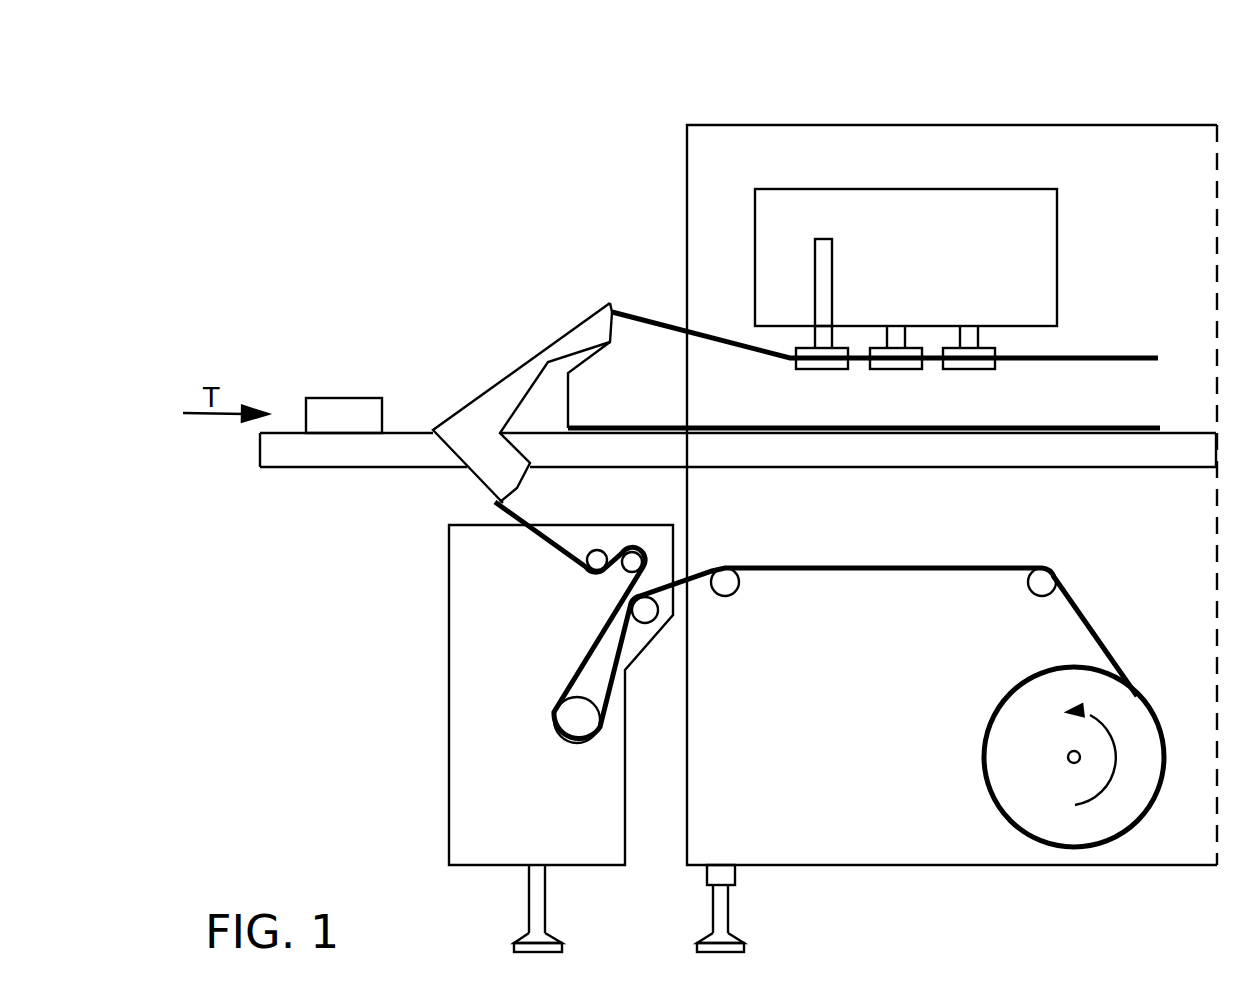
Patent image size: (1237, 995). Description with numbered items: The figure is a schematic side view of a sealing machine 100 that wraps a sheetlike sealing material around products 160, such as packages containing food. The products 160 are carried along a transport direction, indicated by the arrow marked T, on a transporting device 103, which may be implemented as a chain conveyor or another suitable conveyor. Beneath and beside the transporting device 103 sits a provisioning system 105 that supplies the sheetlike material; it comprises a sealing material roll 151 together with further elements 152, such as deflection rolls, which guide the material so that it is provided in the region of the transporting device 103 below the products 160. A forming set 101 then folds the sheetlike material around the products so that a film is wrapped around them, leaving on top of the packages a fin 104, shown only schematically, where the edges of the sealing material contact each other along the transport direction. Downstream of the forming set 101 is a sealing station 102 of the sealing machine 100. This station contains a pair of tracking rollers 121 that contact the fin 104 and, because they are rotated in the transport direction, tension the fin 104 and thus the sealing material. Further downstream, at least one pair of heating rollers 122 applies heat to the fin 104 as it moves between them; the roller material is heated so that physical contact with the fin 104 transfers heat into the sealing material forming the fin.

The sealing machine 100 is at (526, 110).
The forming set 101 is at (526, 330).
The sealing station 102 is at (952, 469).
The transporting device 103 is at (272, 488).
The fin 104 is at (655, 320).
The provisioning system 105 is at (751, 727).
The pair of tracking rollers 121 is at (815, 241).
The pair of heating rollers 122 is at (895, 330).
The sealing material roll 151 is at (1003, 760).
The deflection rolls 152 is at (577, 745).
The products 160 is at (342, 397).